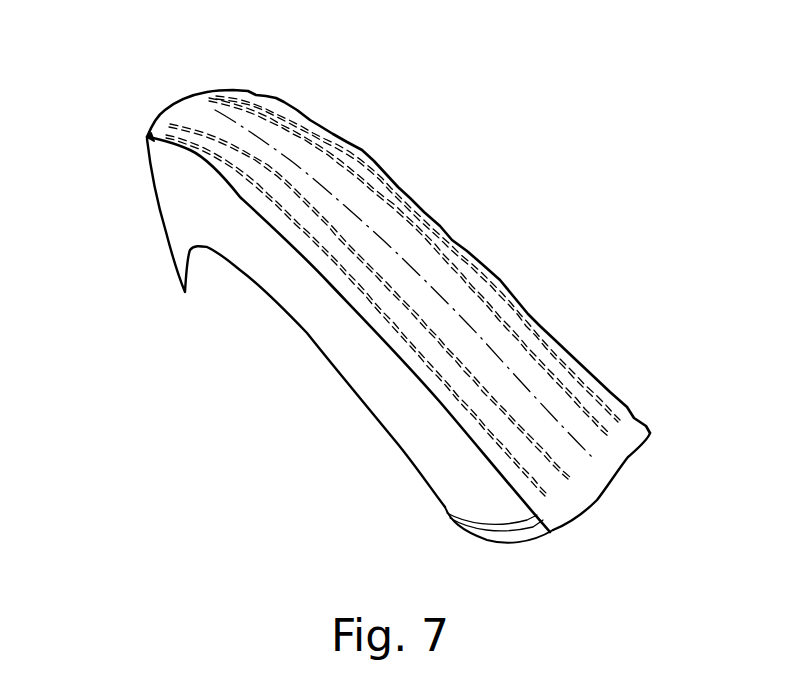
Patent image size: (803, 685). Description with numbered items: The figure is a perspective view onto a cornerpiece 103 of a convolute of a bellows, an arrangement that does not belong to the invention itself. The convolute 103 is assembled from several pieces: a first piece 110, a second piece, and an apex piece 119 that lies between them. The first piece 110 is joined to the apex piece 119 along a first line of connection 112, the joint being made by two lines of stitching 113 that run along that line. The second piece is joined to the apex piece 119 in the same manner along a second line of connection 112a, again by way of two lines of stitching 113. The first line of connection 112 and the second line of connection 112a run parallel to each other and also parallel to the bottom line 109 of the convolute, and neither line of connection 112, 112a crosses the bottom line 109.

The cornerpiece of a convolute 103 is at (475, 330).
The bottom line 109 is at (608, 488).
The first piece 110 is at (367, 373).
The first line of connection 112 is at (563, 496).
The second line of connection 112a is at (618, 435).
The lines of stitching 113 is at (266, 103).
The apex piece 119 is at (385, 238).